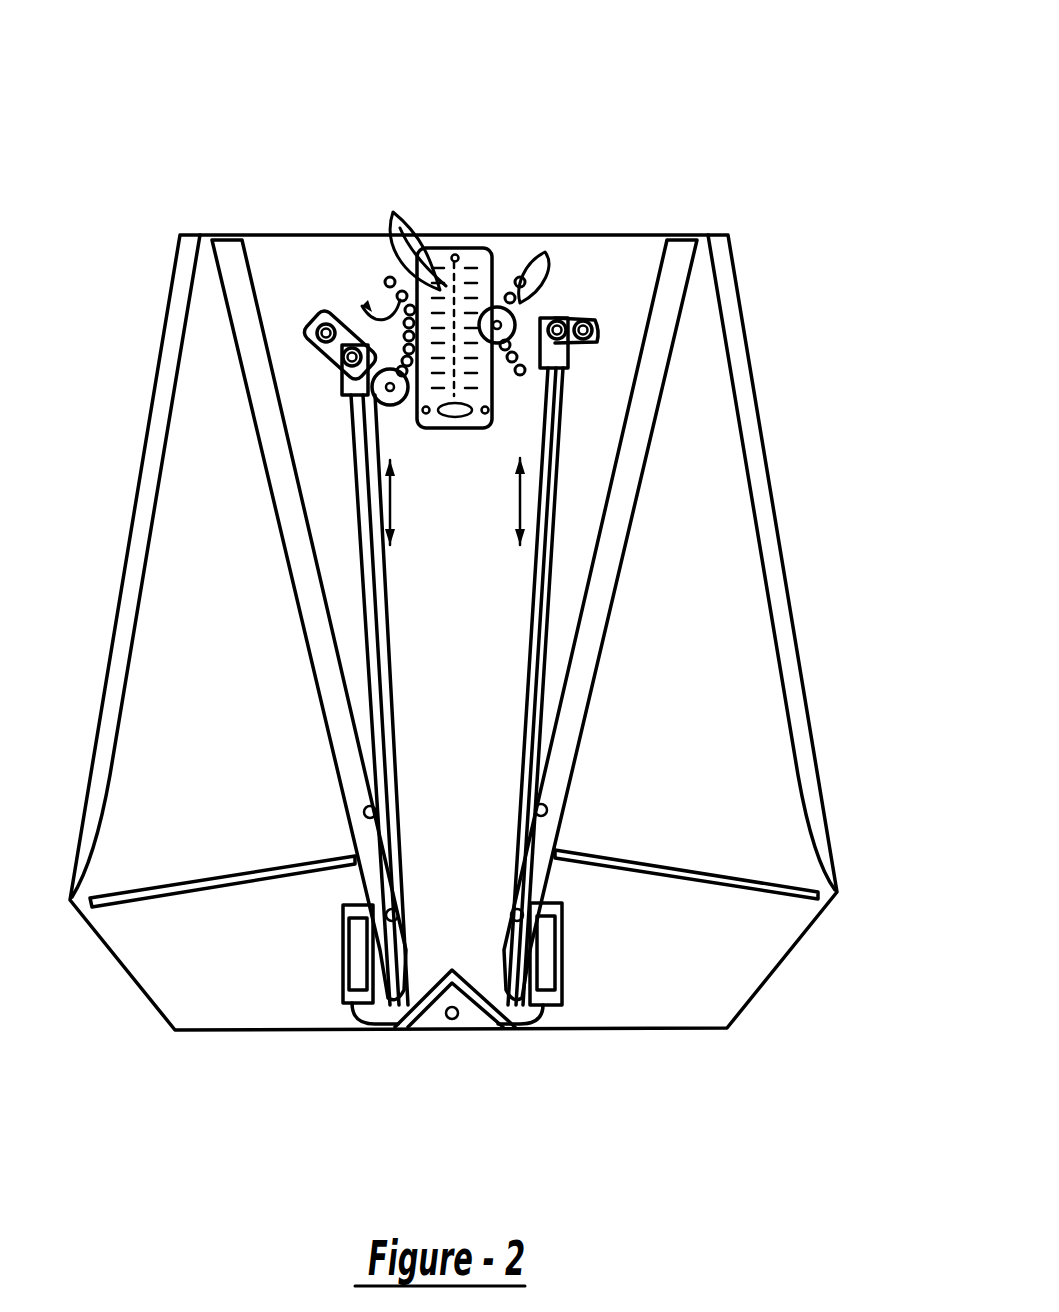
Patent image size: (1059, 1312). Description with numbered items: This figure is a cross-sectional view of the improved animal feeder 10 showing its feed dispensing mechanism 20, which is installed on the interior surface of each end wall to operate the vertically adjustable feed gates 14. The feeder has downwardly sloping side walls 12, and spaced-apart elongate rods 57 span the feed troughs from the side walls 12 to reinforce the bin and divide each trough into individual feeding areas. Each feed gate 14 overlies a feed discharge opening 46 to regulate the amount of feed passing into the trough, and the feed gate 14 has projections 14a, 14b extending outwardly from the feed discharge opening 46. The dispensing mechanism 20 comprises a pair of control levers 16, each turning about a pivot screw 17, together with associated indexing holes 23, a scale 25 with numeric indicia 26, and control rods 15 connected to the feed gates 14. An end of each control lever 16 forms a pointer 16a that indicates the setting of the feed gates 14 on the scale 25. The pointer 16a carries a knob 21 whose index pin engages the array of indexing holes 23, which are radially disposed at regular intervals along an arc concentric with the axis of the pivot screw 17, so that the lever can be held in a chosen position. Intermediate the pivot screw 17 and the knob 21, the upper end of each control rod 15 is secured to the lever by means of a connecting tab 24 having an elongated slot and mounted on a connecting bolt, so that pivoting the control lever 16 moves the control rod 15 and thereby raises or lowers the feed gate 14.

The animal feeder 10 is at (453, 560).
The side wall 12 is at (312, 628).
The feed gate 14 is at (556, 946).
The projection 14a is at (585, 862).
The projection 14b is at (562, 1012).
The control rod 15 is at (392, 648).
The control lever 16 is at (572, 316).
The pointer 16a is at (400, 395).
The pivot screw 17 is at (318, 328).
The feed dispensing mechanism 20 is at (306, 272).
The knob 21 is at (376, 406).
The indexing holes 23 is at (460, 306).
The connecting tab 24 is at (340, 392).
The scale 25 is at (488, 248).
The numeric indicia 26 is at (411, 232).
The feed discharge opening 46 is at (530, 1018).
The rod 57 is at (252, 866).